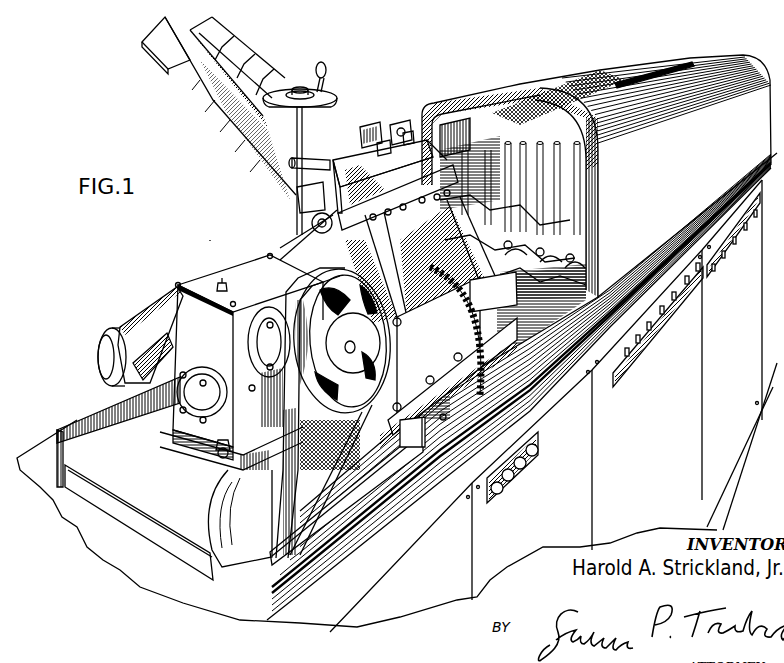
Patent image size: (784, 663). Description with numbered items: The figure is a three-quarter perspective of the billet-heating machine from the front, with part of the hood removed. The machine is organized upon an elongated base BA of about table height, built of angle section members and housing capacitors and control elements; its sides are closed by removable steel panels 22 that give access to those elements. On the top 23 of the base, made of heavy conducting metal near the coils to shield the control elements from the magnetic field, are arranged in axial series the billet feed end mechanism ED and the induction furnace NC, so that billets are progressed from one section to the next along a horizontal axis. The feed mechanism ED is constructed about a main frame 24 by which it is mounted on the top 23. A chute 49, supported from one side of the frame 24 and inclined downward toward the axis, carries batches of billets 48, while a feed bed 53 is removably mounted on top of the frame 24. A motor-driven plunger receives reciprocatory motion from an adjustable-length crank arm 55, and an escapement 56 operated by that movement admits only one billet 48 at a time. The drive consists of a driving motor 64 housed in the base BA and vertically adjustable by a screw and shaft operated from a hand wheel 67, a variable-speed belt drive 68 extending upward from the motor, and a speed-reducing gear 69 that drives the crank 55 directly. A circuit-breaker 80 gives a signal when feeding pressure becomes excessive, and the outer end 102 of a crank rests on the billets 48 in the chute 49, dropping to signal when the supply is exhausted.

The removable panels 22 is at (652, 440).
The top of the table 23 is at (528, 355).
The main frame 24 is at (431, 322).
The billets 48 is at (240, 39).
The chute 49 is at (188, 72).
The feed bed 53 is at (369, 195).
The crank arm 55 is at (148, 318).
The escapement 56 is at (376, 135).
The driving motor 64 is at (205, 535).
The hand wheel 67 is at (285, 94).
The variable-speed belt drive 68 is at (358, 453).
The speed-reducing gear 69 is at (238, 272).
The circuit-breaker 80 is at (428, 243).
The outer end of crank 102 is at (342, 132).
The induction furnace NC is at (599, 177).
The billet feed end mechanism ED is at (224, 226).
The base BA is at (240, 610).